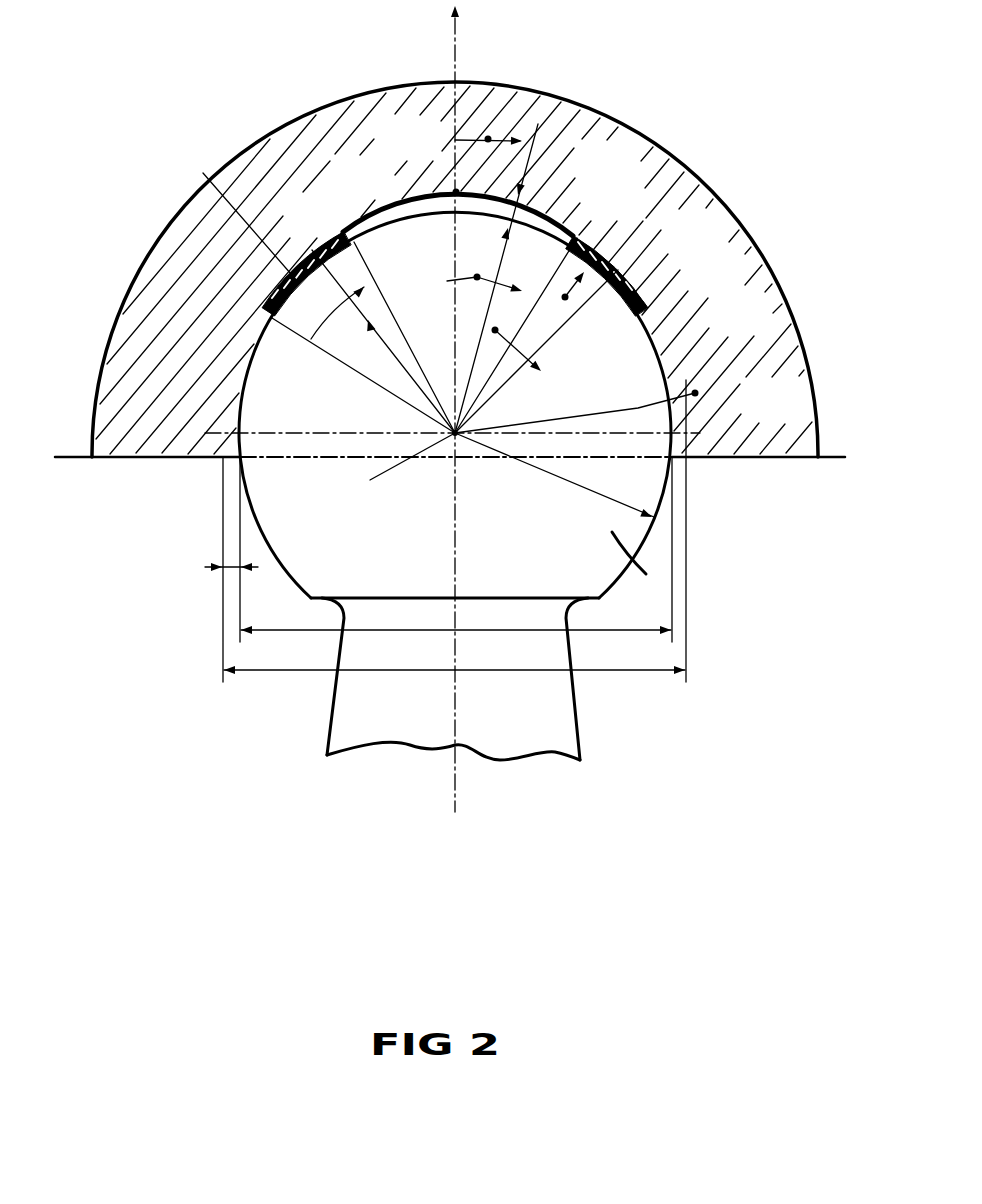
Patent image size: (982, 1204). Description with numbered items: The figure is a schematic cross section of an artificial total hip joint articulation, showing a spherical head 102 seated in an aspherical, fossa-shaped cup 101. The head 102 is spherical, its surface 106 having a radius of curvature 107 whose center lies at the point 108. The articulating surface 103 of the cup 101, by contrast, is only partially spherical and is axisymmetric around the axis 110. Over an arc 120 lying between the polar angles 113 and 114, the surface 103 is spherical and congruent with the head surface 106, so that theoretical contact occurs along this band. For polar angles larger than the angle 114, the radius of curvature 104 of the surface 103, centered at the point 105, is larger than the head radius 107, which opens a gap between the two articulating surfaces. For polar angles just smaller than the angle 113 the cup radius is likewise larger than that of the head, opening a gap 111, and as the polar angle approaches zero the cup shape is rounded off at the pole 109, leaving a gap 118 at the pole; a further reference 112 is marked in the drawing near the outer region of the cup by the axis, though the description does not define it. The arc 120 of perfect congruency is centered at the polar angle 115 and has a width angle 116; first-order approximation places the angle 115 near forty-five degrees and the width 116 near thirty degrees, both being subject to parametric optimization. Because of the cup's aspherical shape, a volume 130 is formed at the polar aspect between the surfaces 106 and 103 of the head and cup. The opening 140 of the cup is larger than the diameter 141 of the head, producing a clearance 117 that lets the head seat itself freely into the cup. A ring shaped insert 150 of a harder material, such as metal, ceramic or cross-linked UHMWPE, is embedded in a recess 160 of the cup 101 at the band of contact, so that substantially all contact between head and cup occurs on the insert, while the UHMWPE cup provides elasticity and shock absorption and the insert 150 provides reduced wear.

The cup 101 is at (320, 145).
The head 102 is at (283, 490).
The articulating surface of the cup 103 is at (684, 442).
The radius of curvature 104 is at (639, 407).
The center 105 is at (370, 481).
The head surface 106 is at (633, 553).
The radius of curvature of the head 107 is at (725, 246).
The center point 108 is at (452, 432).
The pole 109 is at (453, 192).
The axis 110 is at (460, 42).
The gap 111 is at (526, 171).
The lateral offset arrow 112 is at (489, 138).
The polar angle 113 is at (640, 217).
The polar angle 114 is at (565, 297).
The polar angle of the band center 115 is at (447, 281).
The width angle 116 is at (315, 334).
The clearance 117 is at (223, 572).
The gap at the pole 118 is at (455, 199).
The arc 120 is at (742, 285).
The volume 130 is at (357, 239).
The opening of the cup 140 is at (277, 672).
The diameter of the head 141 is at (311, 627).
The ring shaped insert 150 is at (640, 232).
The recess 160 is at (245, 216).